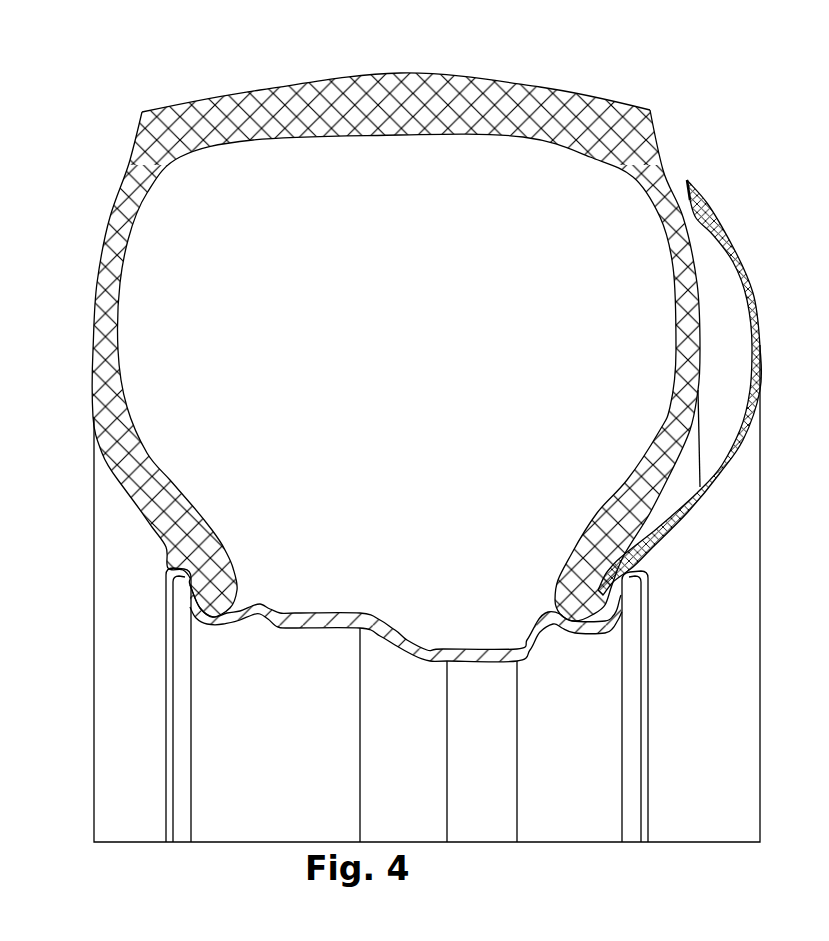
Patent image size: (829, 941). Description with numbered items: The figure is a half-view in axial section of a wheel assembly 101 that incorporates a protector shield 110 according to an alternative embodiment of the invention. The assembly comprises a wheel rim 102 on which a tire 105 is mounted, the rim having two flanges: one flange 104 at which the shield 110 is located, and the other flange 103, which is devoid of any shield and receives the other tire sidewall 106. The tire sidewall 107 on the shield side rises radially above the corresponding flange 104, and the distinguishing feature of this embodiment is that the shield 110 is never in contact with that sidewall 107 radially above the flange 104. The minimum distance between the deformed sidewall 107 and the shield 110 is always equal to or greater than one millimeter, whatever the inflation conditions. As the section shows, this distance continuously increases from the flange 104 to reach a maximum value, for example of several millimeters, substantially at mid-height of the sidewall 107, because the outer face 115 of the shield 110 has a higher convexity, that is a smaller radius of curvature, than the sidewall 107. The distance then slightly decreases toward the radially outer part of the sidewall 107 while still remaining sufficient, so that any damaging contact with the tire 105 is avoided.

The wheel assembly 101 is at (409, 425).
The wheel rim 102 is at (334, 650).
The flange 103 is at (166, 570).
The flange 104 is at (655, 570).
The tire 105 is at (464, 59).
The tire sidewall 106 is at (122, 371).
The tire sidewall 107 is at (672, 346).
The shield 110 is at (761, 286).
The outer face 115 is at (679, 528).